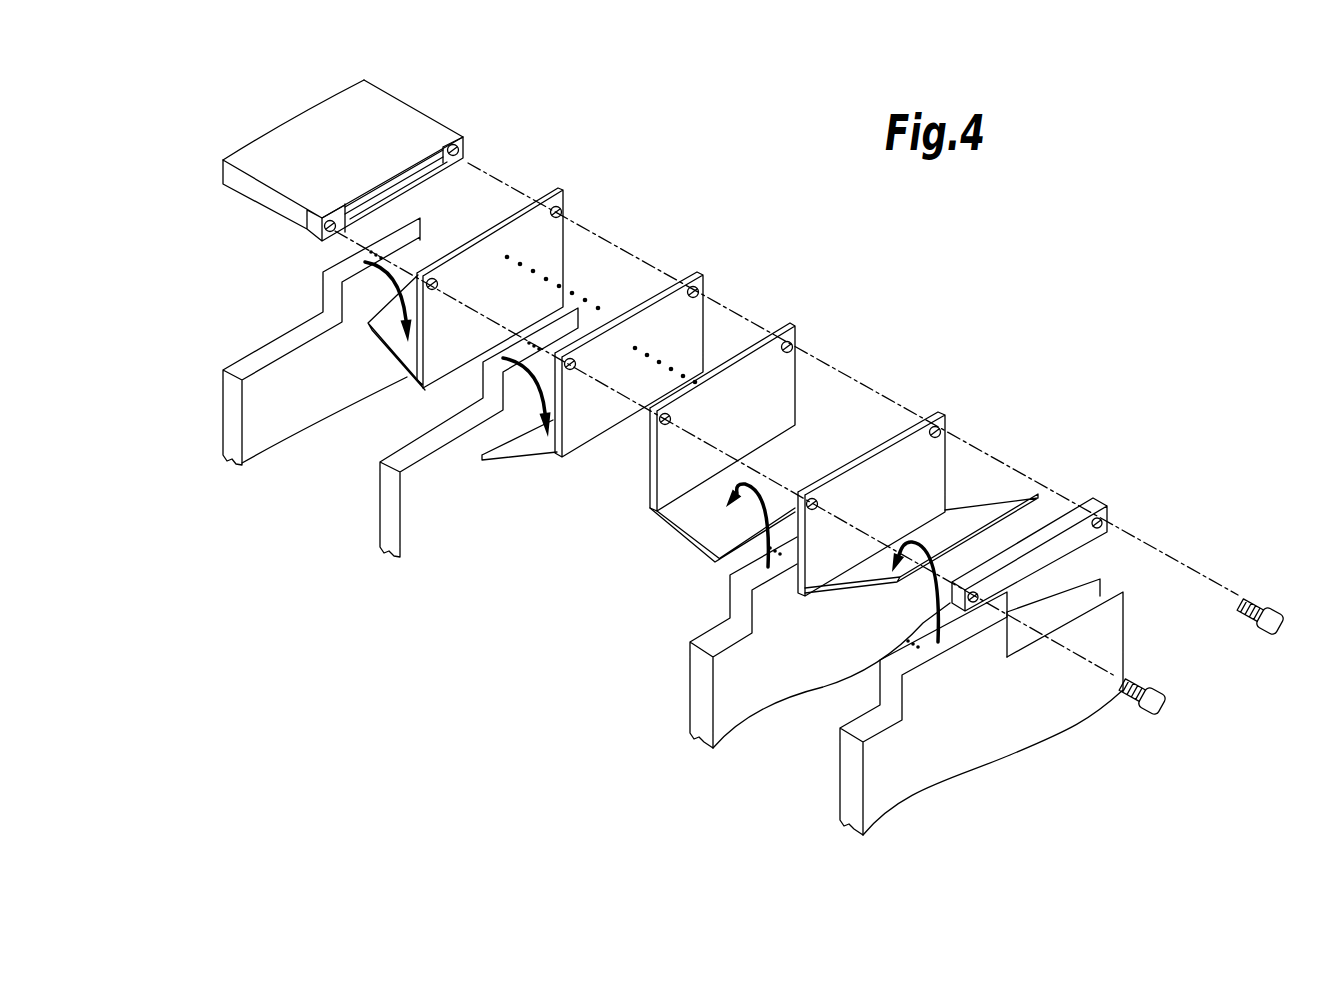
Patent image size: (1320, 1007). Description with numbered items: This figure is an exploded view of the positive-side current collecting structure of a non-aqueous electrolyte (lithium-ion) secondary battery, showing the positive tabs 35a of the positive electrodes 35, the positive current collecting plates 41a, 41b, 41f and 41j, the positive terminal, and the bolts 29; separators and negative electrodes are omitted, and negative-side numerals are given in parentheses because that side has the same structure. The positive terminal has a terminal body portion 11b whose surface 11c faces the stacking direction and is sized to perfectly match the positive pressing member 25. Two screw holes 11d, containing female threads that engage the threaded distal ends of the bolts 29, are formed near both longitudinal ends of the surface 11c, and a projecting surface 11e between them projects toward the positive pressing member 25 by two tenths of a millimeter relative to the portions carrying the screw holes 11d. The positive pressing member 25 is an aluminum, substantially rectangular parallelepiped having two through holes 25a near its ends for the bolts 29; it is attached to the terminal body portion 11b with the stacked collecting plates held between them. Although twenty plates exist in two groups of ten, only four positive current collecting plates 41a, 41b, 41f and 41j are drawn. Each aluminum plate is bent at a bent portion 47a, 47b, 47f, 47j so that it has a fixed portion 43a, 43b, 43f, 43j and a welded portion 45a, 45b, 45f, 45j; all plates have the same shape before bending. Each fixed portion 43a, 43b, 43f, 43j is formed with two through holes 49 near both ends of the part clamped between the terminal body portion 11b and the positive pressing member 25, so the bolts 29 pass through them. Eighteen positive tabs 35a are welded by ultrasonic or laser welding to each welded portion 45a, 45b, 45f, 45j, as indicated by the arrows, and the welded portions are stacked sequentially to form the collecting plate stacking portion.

The terminal body portion 11b is at (410, 118).
The surface 11c is at (425, 173).
The screw holes 11d is at (460, 148).
The projecting surface 11e is at (360, 210).
The positive electrodes 35 is at (601, 547).
The positive tabs 35a is at (441, 242).
The through holes 49 is at (562, 210).
The positive current collecting plate 41j is at (562, 212).
The fixed portion 43j is at (550, 232).
The welded portion 45j is at (393, 313).
The bent portion 47j is at (407, 377).
The positive current collecting plate 41f is at (700, 300).
The fixed portion 43f is at (688, 323).
The welded portion 45f is at (520, 440).
The bent portion 47f is at (522, 443).
The positive current collecting plate 41b is at (798, 350).
The fixed portion 43b is at (787, 372).
The welded portion 45b is at (655, 508).
The bent portion 47b is at (693, 517).
The positive current collecting plate 41a is at (937, 448).
The fixed portion 43a is at (940, 470).
The welded portion 45a is at (973, 507).
The bent portion 47a is at (803, 597).
The positive pressing member 25 is at (1063, 545).
The through holes 25a is at (1104, 522).
The bolts 29 is at (1281, 628).